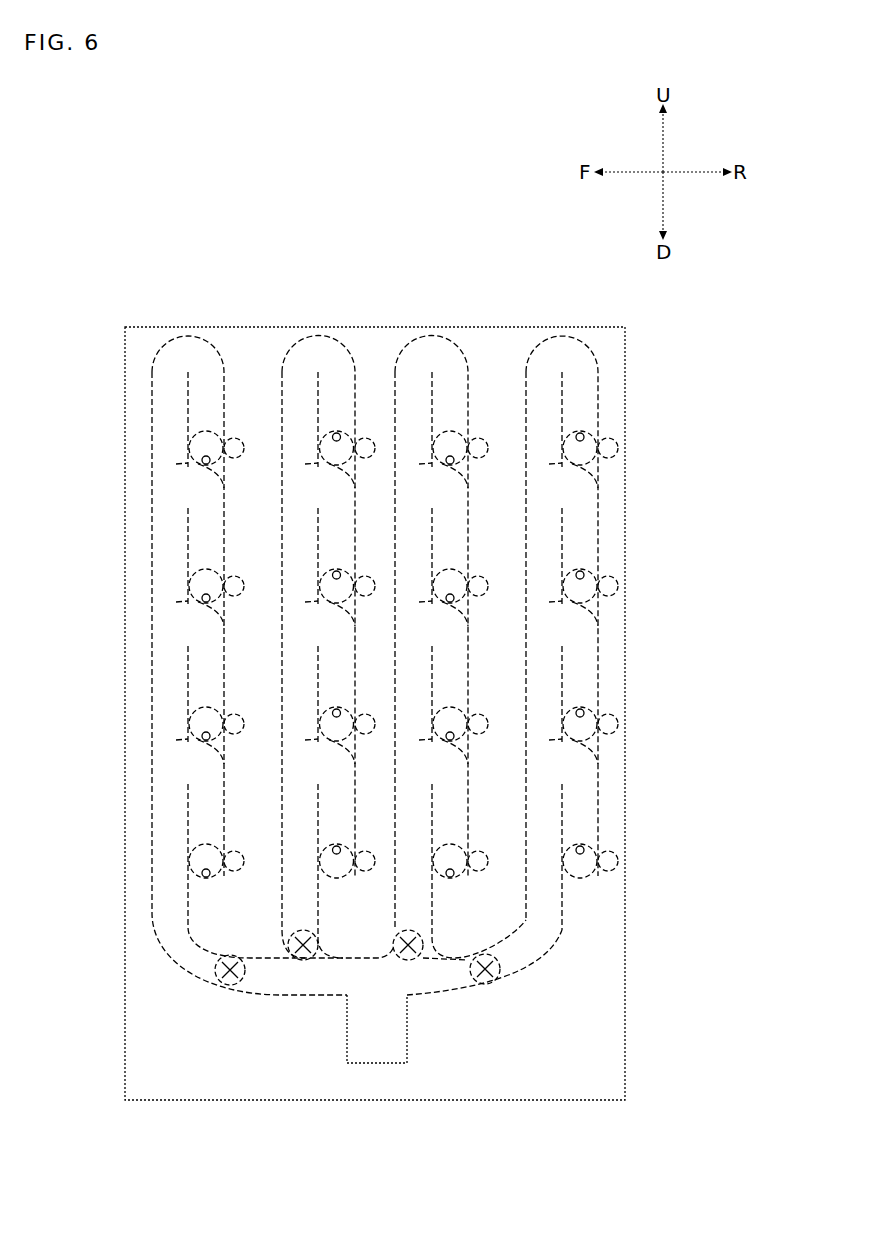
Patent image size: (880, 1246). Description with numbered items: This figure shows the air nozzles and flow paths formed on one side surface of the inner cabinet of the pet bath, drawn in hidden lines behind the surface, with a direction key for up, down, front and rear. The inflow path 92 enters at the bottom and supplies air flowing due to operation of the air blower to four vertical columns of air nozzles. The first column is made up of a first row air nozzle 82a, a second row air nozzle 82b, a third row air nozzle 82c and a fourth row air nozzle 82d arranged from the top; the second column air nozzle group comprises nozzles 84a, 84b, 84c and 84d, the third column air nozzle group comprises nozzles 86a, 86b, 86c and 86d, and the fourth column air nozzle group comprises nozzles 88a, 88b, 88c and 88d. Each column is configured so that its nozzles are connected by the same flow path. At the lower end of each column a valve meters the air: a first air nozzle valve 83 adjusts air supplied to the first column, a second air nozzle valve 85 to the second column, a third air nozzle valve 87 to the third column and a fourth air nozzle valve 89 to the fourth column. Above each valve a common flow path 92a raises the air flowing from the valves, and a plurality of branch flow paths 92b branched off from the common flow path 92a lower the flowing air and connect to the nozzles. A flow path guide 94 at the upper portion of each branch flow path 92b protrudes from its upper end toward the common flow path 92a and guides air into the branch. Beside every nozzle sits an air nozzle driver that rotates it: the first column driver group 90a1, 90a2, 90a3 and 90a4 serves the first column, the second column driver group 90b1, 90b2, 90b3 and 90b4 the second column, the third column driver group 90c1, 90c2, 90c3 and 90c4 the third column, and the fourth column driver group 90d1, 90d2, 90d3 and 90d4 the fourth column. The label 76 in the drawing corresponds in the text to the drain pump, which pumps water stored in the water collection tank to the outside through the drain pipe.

The drain pump 76 is at (178, 330).
The inflow path 92 is at (377, 1037).
The common flow path 92a is at (168, 849).
The branch flow path 92b is at (198, 377).
The flow path guide 94 is at (187, 463).
The first row air nozzle 82a is at (206, 430).
The second row air nozzle 82b is at (227, 570).
The third row air nozzle 82c is at (227, 708).
The fourth row air nozzle 82d is at (227, 833).
The second column air nozzle 84a is at (338, 430).
The second column air nozzle 84b is at (356, 566).
The second column air nozzle 84c is at (355, 704).
The second column air nozzle 84d is at (356, 830).
The third column air nozzle 86a is at (450, 430).
The third column air nozzle 86b is at (468, 567).
The third column air nozzle 86c is at (467, 705).
The third column air nozzle 86d is at (468, 831).
The fourth column air nozzle 88a is at (582, 431).
The fourth column air nozzle 88b is at (614, 574).
The fourth column air nozzle 88c is at (614, 712).
The fourth column air nozzle 88d is at (614, 838).
The air nozzle driver 90a1 is at (228, 441).
The air nozzle driver 90a2 is at (255, 569).
The air nozzle driver 90a3 is at (255, 707).
The air nozzle driver 90a4 is at (255, 844).
The air nozzle driver 90b1 is at (358, 441).
The air nozzle driver 90b2 is at (379, 569).
The air nozzle driver 90b3 is at (379, 707).
The air nozzle driver 90b4 is at (379, 844).
The air nozzle driver 90c1 is at (471, 441).
The air nozzle driver 90c2 is at (495, 569).
The air nozzle driver 90c3 is at (495, 707).
The air nozzle driver 90c4 is at (495, 844).
The air nozzle driver 90d1 is at (610, 438).
The air nozzle driver 90d2 is at (643, 577).
The air nozzle driver 90d3 is at (643, 715).
The air nozzle driver 90d4 is at (643, 852).
The first air nozzle valve 83 is at (213, 981).
The second air nozzle valve 85 is at (307, 963).
The third air nozzle valve 87 is at (413, 958).
The fourth air nozzle valve 89 is at (487, 986).